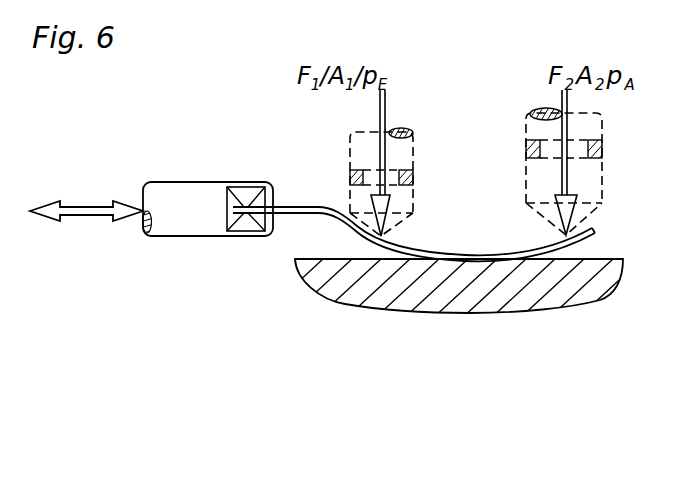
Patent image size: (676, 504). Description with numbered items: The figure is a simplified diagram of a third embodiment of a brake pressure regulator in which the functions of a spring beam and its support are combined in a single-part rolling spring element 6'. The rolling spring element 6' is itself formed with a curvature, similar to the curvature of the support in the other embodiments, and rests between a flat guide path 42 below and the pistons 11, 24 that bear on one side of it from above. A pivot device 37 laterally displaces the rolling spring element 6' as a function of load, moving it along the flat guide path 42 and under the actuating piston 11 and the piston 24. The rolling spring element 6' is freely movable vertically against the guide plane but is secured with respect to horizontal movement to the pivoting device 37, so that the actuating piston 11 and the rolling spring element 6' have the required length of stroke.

The pivot device 37 is at (203, 212).
The rolling spring element 6' is at (414, 342).
The actuating piston 11 is at (359, 205).
The piston 24 is at (543, 180).
The flat guide path 42 is at (495, 290).